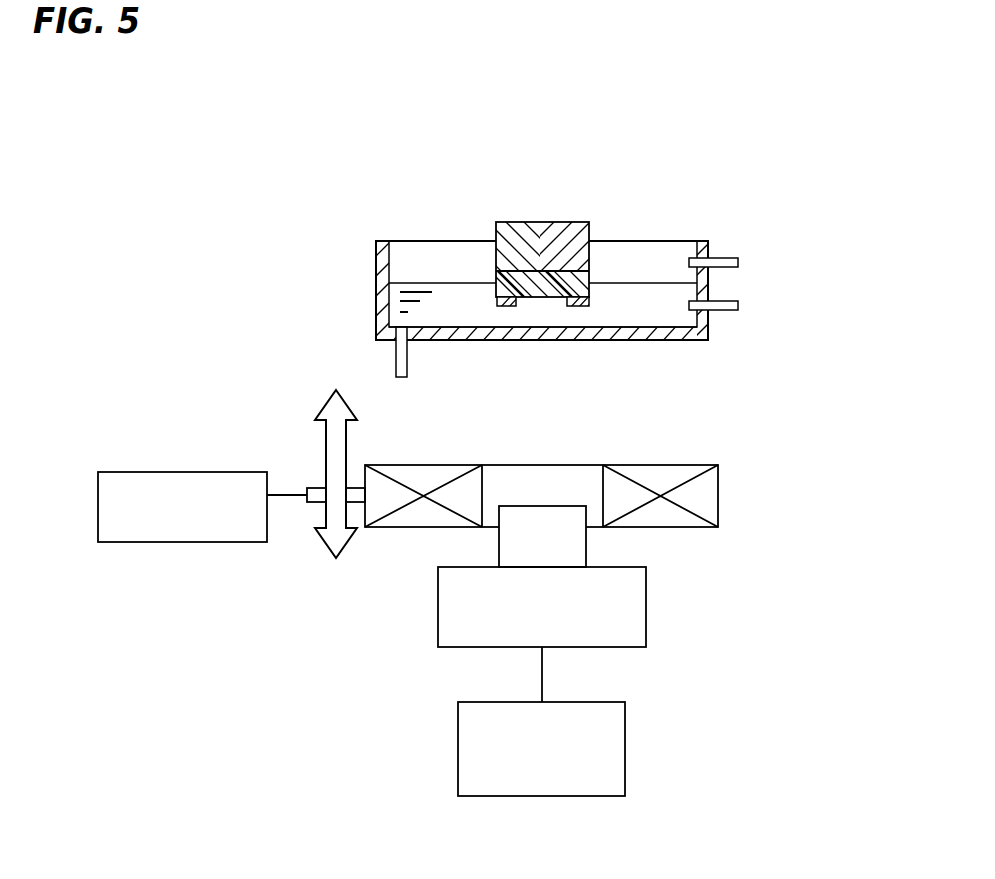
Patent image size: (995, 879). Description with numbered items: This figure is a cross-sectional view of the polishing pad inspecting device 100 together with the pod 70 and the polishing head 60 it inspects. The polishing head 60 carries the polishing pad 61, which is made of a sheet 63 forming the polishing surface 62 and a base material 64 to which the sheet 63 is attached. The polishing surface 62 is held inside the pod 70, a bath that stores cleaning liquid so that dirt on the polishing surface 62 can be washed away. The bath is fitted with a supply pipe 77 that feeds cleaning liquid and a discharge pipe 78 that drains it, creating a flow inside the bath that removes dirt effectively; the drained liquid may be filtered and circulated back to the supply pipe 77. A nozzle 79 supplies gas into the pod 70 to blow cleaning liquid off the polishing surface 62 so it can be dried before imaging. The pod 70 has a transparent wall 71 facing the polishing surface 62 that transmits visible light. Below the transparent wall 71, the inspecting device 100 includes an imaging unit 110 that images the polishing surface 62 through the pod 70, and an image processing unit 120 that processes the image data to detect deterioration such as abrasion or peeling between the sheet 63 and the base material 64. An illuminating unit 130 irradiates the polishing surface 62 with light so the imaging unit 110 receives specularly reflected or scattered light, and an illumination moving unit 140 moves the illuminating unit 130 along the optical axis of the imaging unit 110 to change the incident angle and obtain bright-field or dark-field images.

The polishing pad inspecting device 100 is at (500, 812).
The imaging unit 110 is at (646, 605).
The image processing unit 120 is at (599, 796).
The illuminating unit 130 is at (718, 497).
The illumination moving unit 140 is at (238, 472).
The polishing head 60 is at (546, 206).
The polishing pad 61 is at (428, 188).
The polishing surface 62 is at (577, 306).
The sheet 63 is at (495, 301).
The base material 64 is at (525, 282).
The pod 70 is at (362, 295).
The transparent wall 71 is at (636, 334).
The supply pipe 77 is at (738, 305).
The discharge pipe 78 is at (407, 358).
The nozzle 79 is at (738, 262).